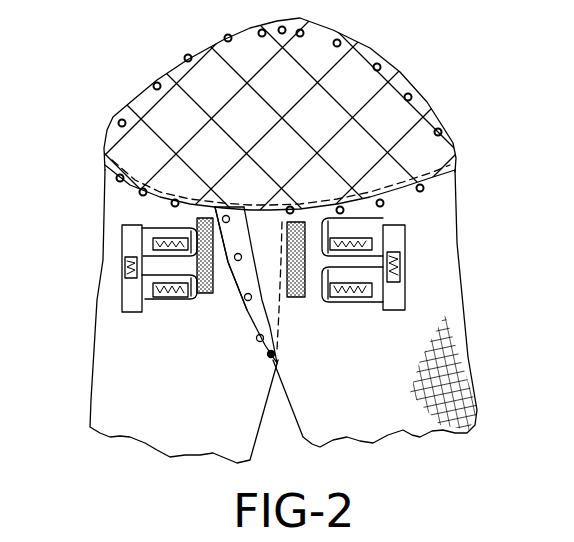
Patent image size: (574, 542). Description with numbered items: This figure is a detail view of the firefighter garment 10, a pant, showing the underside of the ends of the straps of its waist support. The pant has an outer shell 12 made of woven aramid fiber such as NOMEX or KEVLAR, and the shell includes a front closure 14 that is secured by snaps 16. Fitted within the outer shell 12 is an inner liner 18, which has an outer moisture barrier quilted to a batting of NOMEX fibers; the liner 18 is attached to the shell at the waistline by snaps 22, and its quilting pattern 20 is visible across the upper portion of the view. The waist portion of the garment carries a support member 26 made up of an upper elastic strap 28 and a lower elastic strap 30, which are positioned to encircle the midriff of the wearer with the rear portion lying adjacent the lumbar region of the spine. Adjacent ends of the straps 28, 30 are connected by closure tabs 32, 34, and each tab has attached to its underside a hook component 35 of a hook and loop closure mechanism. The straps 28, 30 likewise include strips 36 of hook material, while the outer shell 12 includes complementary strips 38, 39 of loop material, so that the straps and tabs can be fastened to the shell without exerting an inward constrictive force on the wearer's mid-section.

The firefighter garment 10 is at (472, 240).
The outer shell 12 is at (437, 307).
The front closure 14 is at (253, 325).
The snaps 16 is at (240, 262).
The inner liner 18 is at (417, 113).
The quilted grid of hood 20 is at (405, 82).
The snaps 22 is at (152, 82).
The support member 26 is at (416, 221).
The upper elastic strap 28 is at (160, 230).
The lower elastic strap 30 is at (148, 307).
The closure tab 32 is at (128, 293).
The closure tab 34 is at (395, 308).
The hook component 35 is at (125, 267).
The strips of hook material 36 is at (163, 253).
The strip of loop material 38 is at (208, 298).
The strip of loop material 39 is at (300, 300).